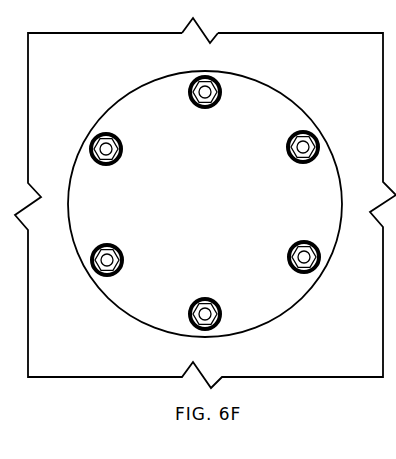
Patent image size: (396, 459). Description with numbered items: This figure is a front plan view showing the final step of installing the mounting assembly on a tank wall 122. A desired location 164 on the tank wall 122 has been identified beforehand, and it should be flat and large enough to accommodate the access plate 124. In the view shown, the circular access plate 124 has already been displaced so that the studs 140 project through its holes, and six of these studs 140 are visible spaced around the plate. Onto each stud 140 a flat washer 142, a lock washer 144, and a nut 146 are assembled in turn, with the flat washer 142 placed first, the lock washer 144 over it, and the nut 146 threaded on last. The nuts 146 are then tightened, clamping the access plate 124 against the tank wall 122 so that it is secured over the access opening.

The tank wall 122 is at (95, 60).
The desired location 164 is at (278, 67).
The access plate 124 is at (270, 122).
The studs 140 is at (157, 236).
The flat washers 142 is at (117, 250).
The lock washers 144 is at (124, 259).
The nuts 146 is at (122, 266).